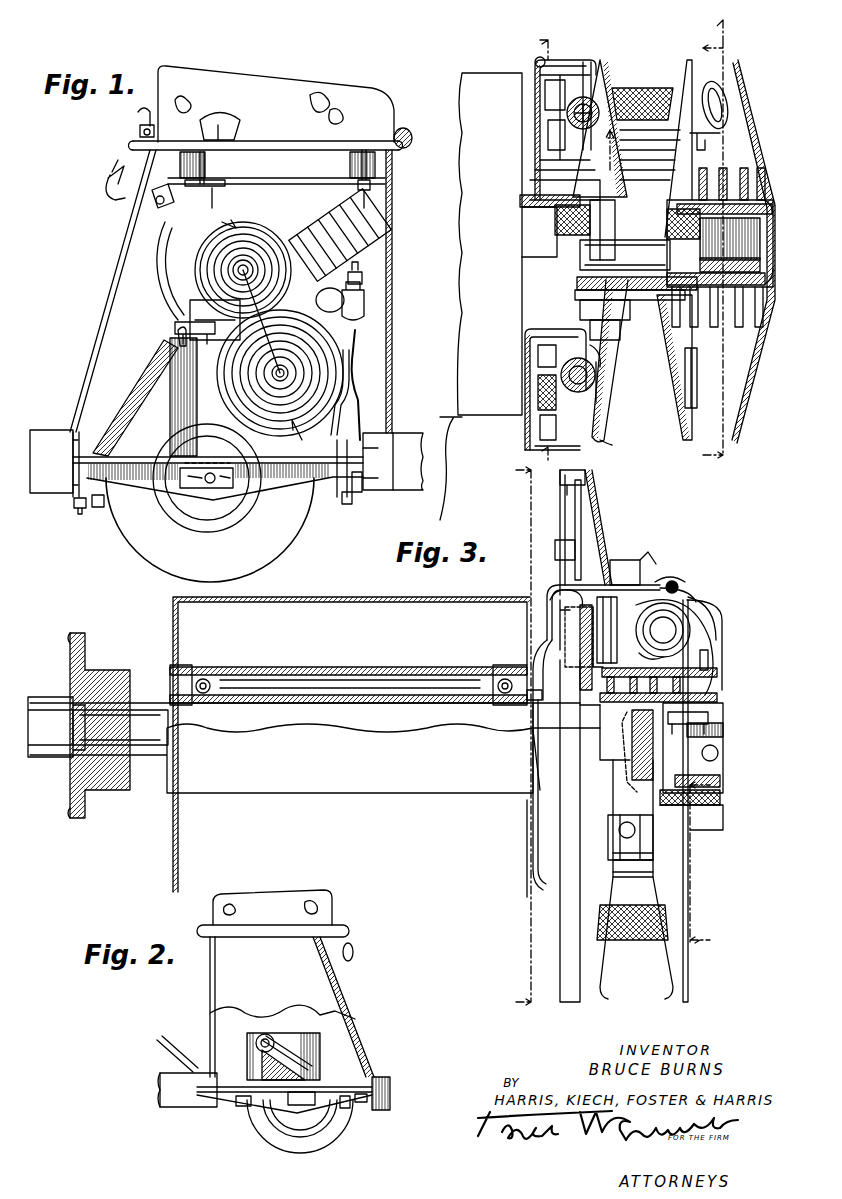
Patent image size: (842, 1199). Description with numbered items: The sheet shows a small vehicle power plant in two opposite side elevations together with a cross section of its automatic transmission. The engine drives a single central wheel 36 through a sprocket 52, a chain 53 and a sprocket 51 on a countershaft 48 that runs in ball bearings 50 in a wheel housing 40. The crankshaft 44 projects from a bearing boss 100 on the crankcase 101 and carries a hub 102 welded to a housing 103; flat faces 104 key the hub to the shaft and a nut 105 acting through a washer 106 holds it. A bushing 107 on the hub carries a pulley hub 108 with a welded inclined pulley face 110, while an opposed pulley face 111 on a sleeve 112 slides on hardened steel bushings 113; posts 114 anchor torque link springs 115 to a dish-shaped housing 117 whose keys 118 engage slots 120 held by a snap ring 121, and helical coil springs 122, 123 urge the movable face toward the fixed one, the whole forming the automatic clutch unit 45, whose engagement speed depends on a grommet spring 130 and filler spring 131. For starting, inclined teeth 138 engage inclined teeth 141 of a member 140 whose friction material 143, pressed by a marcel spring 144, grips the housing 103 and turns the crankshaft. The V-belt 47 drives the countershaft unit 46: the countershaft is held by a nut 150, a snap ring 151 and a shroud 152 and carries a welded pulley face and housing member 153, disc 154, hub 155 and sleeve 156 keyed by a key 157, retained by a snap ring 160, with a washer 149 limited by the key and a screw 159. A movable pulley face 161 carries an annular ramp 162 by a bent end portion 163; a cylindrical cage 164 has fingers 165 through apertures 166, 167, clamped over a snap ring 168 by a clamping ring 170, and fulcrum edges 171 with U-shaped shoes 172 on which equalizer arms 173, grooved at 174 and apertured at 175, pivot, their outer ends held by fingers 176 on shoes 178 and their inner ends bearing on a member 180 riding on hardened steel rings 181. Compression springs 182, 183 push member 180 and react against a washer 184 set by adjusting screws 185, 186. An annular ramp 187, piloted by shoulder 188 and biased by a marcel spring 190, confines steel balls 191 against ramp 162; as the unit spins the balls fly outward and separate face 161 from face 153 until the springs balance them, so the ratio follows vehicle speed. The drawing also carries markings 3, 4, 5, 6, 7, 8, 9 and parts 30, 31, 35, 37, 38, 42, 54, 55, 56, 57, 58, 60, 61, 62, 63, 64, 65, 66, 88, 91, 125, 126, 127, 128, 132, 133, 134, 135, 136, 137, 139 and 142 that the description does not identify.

In FIG. 1, the section line 3- 3 is at (266, 329).
In FIG. 3, the section line 4- 4 is at (554, 244).
In FIG. 3, the section line 5- 5 is at (524, 140).
In FIG. 3, the section line 6- 6 is at (697, 248).
In FIG. 3, the section line 7- 7 is at (723, 20).
In FIG. 3, the section line 8- 8 is at (507, 735).
In FIG. 3, the section line 9- 9 is at (692, 528).
In FIG. 1, the frame end member 30 is at (399, 495).
In FIG. 2, the frame end member 30 is at (391, 1092).
In FIG. 1, the frame 31 is at (370, 456).
In FIG. 2, the frame 31 is at (208, 1108).
In FIG. 1, the drive unit 35 is at (154, 311).
In FIG. 2, the drive unit 35 is at (216, 1053).
In FIG. 1, the wheel 36 is at (278, 544).
In FIG. 2, the frame bracket 37 is at (243, 1108).
In FIG. 1, the mounting plate 38 is at (172, 425).
In FIG. 2, the mounting plate 38 is at (300, 1070).
In FIG. 1, the wheel housing 40 is at (118, 396).
In FIG. 2, the wheel housing 40 is at (322, 1050).
In FIG. 3, the wheel housing 40 is at (180, 642).
In FIG. 1, the wheel hub 42 is at (148, 540).
In FIG. 2, the wheel hub 42 is at (275, 1135).
In FIG. 1, the crankshaft 44 is at (250, 262).
In FIG. 3, the crankshaft 44 is at (760, 230).
In FIG. 1, the automatic clutch unit 45 is at (200, 288).
In FIG. 3, the automatic clutch unit 45 is at (756, 418).
In FIG. 1, the countershaft unit 46 is at (345, 404).
In FIG. 3, the countershaft unit 46 is at (758, 570).
In FIG. 1, the V-belt 47 is at (175, 332).
In FIG. 3, the V-belt 47 is at (660, 85).
In FIG. 1, the countershaft 48 is at (284, 373).
In FIG. 3, the countershaft 48 is at (338, 700).
In FIG. 3, the ball bearings 50 is at (233, 672).
In FIG. 2, the sprocket 51 is at (264, 1036).
In FIG. 3, the sprocket 51 is at (95, 655).
In FIG. 2, the sprocket 52 is at (305, 1132).
In FIG. 2, the chain 53 is at (285, 1040).
In FIG. 1, the support bracket 54 is at (212, 160).
In FIG. 1, the support post 55 is at (375, 165).
In FIG. 1, the bracket 56 is at (150, 226).
In FIG. 1, the bolt 57 is at (98, 500).
In FIG. 2, the bolt 57 is at (347, 1110).
In FIG. 1, the nut 58 is at (80, 514).
In FIG. 2, the nut 58 is at (365, 1103).
In FIG. 1, the bolt 60 is at (356, 496).
In FIG. 1, the nut 61 is at (346, 502).
In FIG. 1, the hopper 62 is at (393, 245).
In FIG. 2, the hopper 62 is at (213, 988).
In FIG. 1, the hopper lid 63 is at (326, 90).
In FIG. 2, the hopper lid 63 is at (302, 895).
In FIG. 1, the lever 64 is at (112, 186).
In FIG. 1, the fastener 65 is at (222, 138).
In FIG. 1, the handle 66 is at (145, 126).
In FIG. 1, the throttle 88 is at (362, 278).
In FIG. 1, the cylinder fins 91 is at (305, 215).
In FIG. 3, the bearing boss 100 is at (520, 234).
In FIG. 1, the crankcase 101 is at (425, 395).
In FIG. 3, the hub 102 is at (578, 252).
In FIG. 3, the housing 103 is at (545, 107).
In FIG. 3, the flat faces 104 is at (760, 245).
In FIG. 3, the nut 105 is at (762, 268).
In FIG. 3, the washer 106 is at (677, 208).
In FIG. 3, the bushing 107 is at (625, 255).
In FIG. 3, the pulley hub 108 is at (615, 290).
In FIG. 3, the inclined pulley face 110 is at (608, 445).
In FIG. 3, the inclined pulley face 111 is at (660, 440).
In FIG. 3, the sleeve 112 is at (710, 319).
In FIG. 3, the hardened steel bushings 113 is at (735, 165).
In FIG. 3, the posts 114 is at (720, 133).
In FIG. 3, the springs 115 is at (698, 95).
In FIG. 1, the dish-shaped housing 117 is at (334, 300).
In FIG. 3, the dish-shaped housing 117 is at (760, 110).
In FIG. 1, the keys 118 is at (232, 268).
In FIG. 3, the keys 118 is at (766, 204).
In FIG. 3, the slots 120 is at (772, 205).
In FIG. 3, the snap ring 121 is at (762, 318).
In FIG. 3, the helical coil spring 122 is at (715, 330).
In FIG. 3, the helical coil spring 123 is at (740, 330).
In FIG. 3, the bearing 125 is at (593, 112).
In FIG. 3, the cap 126 is at (534, 58).
In FIG. 3, the roller 127 is at (592, 100).
In FIG. 3, the bolt 128 is at (587, 60).
In FIG. 3, the grommet spring 130 is at (595, 382).
In FIG. 3, the filler spring 131 is at (588, 385).
In FIG. 3, the bearing block 132 is at (536, 380).
In FIG. 3, the plate 133 is at (540, 446).
In FIG. 3, the spacer 134 is at (536, 425).
In FIG. 3, the block 135 is at (536, 352).
In FIG. 3, the bracket 136 is at (525, 333).
In FIG. 3, the bracket plate 137 is at (530, 183).
In FIG. 3, the inclined teeth 138 is at (612, 322).
In FIG. 3, the arm 139 is at (610, 342).
In FIG. 3, the member 140 is at (620, 150).
In FIG. 3, the inclined teeth 141 is at (612, 230).
In FIG. 3, the link 142 is at (600, 378).
In FIG. 3, the friction material 143 is at (552, 210).
In FIG. 3, the marcel spring 144 is at (602, 360).
In FIG. 3, the washer 149 is at (615, 800).
In FIG. 3, the nut 150 is at (42, 700).
In FIG. 3, the snap ring 151 is at (535, 735).
In FIG. 3, the shroud 152 is at (528, 702).
In FIG. 3, the pulley face and housing member 153 is at (690, 505).
In FIG. 3, the disc 154 is at (720, 805).
In FIG. 3, the hub 155 is at (723, 712).
In FIG. 3, the sleeve 156 is at (650, 650).
In FIG. 3, the key 157 is at (723, 730).
In FIG. 3, the screw 159 is at (723, 748).
In FIG. 3, the snap ring 160 is at (723, 768).
In FIG. 3, the inclined pulley face 161 is at (605, 530).
In FIG. 3, the annular ramp 162 is at (750, 851).
In FIG. 3, the end portion 163 is at (605, 631).
In FIG. 3, the cylindrical cage 164 is at (547, 592).
In FIG. 3, the fingers 165 is at (555, 548).
In FIG. 3, the apertures 166 is at (622, 585).
In FIG. 3, the apertures 167 is at (645, 547).
In FIG. 3, the snap ring 168 is at (678, 582).
In FIG. 3, the clamping ring 170 is at (690, 585).
In FIG. 3, the fulcrum edges 171 is at (565, 590).
In FIG. 3, the U-shaped shoes 172 is at (560, 617).
In FIG. 3, the equalizer arms 173 is at (575, 522).
In FIG. 3, the grooves 174 is at (565, 625).
In FIG. 3, the apertures 175 is at (593, 645).
In FIG. 3, the fingers 176 is at (560, 497).
In FIG. 3, the shoes 178 is at (612, 505).
In FIG. 3, the member 180 is at (581, 687).
In FIG. 3, the hardened steel rings 181 is at (612, 708).
In FIG. 3, the compression spring 182 is at (625, 715).
In FIG. 3, the compression spring 183 is at (630, 740).
In FIG. 3, the washer 184 is at (723, 825).
In FIG. 3, the adjusting screw 185 is at (720, 690).
In FIG. 3, the adjusting screw 186 is at (723, 790).
In FIG. 3, the annular ramp 187 is at (710, 648).
In FIG. 3, the shoulder 188 is at (700, 596).
In FIG. 3, the marcel spring 190 is at (716, 615).
In FIG. 3, the steel balls 191 is at (708, 665).